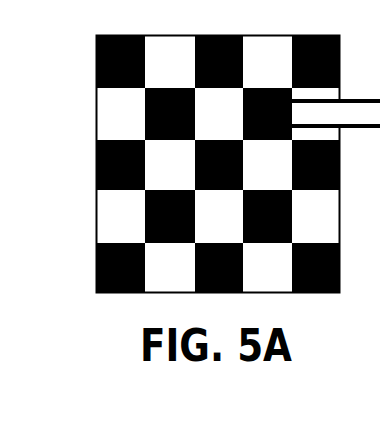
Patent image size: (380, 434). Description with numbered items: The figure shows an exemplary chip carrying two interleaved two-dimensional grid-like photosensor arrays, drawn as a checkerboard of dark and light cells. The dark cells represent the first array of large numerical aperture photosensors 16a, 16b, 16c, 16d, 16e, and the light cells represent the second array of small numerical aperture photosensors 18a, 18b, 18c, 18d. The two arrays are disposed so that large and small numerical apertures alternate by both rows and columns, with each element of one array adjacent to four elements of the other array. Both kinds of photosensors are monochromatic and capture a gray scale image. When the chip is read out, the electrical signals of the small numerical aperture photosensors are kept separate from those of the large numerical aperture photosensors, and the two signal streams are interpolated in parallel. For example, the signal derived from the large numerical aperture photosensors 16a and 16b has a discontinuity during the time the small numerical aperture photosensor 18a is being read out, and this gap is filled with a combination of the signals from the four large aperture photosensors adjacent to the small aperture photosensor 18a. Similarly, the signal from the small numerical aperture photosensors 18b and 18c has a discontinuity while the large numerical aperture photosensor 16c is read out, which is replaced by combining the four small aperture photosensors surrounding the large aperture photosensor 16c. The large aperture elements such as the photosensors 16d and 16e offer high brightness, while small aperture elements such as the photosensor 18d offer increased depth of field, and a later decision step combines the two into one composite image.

The large numerical aperture photosensor 16a is at (170, 114).
The large numerical aperture photosensor 16b is at (267, 114).
The large numerical aperture photosensor 16c is at (219, 165).
The large numerical aperture photosensor 16d is at (170, 216).
The large numerical aperture photosensor 16e is at (267, 216).
The small numerical aperture photosensor 18a is at (219, 114).
The small numerical aperture photosensor 18b is at (170, 165).
The small numerical aperture photosensor 18c is at (267, 165).
The small numerical aperture photosensor 18d is at (219, 216).